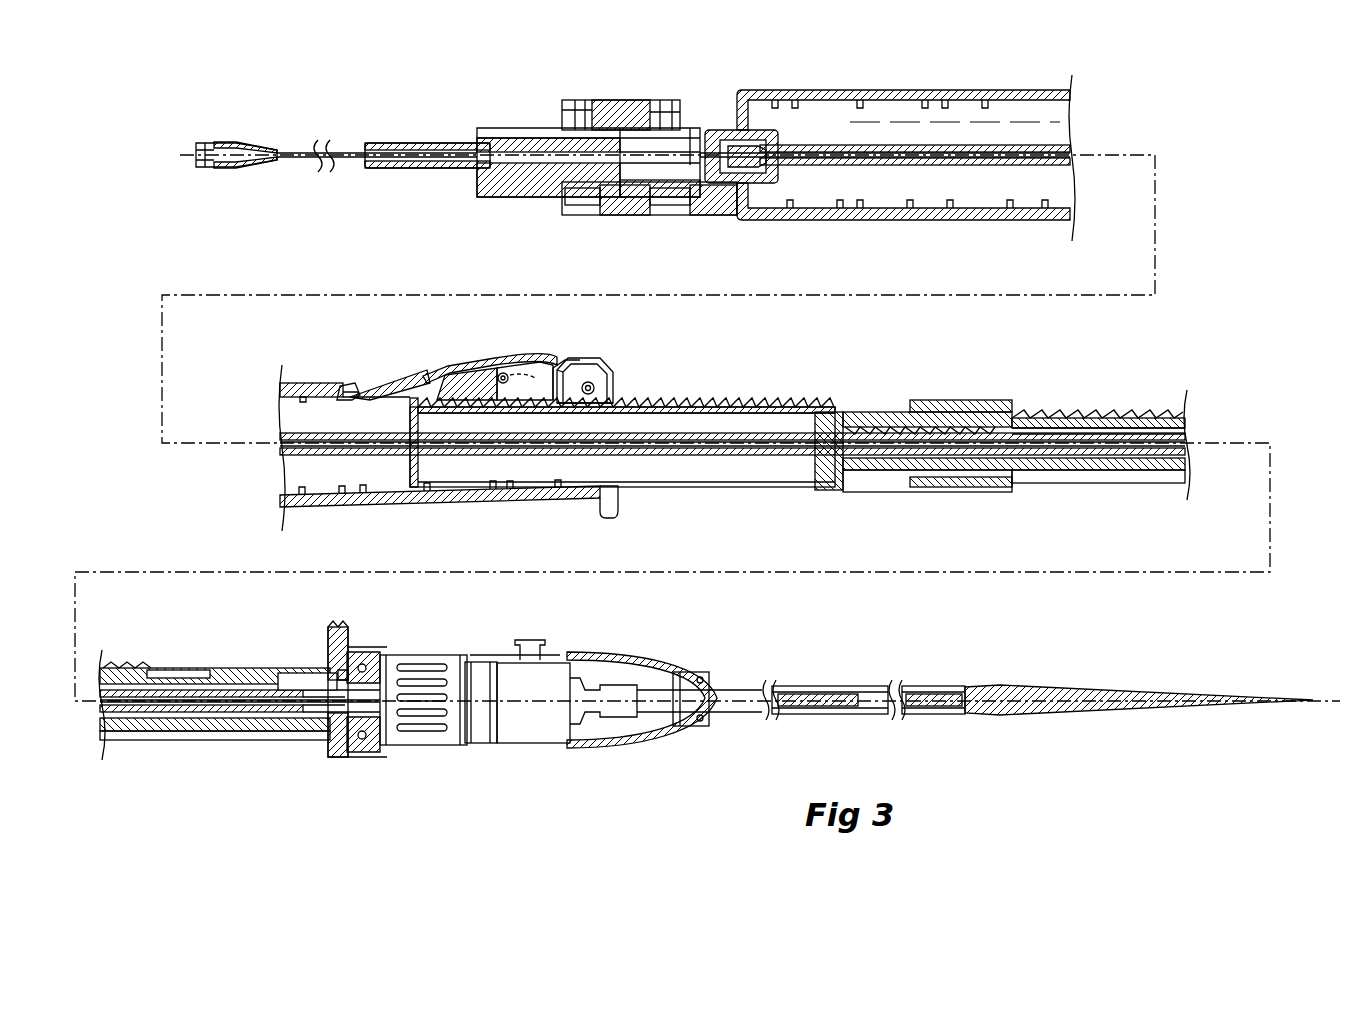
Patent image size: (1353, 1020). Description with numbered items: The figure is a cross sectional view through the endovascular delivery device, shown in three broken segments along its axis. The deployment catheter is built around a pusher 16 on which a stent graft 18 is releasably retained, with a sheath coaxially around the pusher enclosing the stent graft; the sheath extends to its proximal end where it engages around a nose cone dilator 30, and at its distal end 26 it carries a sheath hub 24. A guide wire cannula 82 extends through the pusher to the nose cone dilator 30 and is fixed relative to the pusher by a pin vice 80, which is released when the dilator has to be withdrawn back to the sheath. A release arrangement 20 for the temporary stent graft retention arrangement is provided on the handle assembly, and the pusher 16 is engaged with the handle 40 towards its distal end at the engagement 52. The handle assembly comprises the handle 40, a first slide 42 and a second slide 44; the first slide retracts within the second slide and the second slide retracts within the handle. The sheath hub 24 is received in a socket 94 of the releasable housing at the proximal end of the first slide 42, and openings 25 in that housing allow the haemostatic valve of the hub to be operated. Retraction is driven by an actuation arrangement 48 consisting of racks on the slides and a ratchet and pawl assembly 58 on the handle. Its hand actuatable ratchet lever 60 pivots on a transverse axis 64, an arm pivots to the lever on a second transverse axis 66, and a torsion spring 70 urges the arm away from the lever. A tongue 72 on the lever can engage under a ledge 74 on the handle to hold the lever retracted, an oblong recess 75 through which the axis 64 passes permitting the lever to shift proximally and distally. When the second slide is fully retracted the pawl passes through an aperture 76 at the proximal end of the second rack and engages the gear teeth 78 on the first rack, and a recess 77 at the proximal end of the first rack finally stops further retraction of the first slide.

The pusher 16 is at (970, 167).
The stent graft 18 is at (915, 713).
The release arrangement 20 is at (737, 88).
The sheath hub 24 is at (535, 710).
The openings 25 is at (440, 655).
The distal end 26 is at (729, 729).
The nose cone dilator 30 is at (1040, 713).
The handle 40 is at (905, 218).
The first slide 42 is at (1070, 470).
The second slide 44 is at (752, 488).
The actuation arrangement 48 is at (410, 354).
The pusher engagement 52 is at (775, 130).
The ratchet and pawl assembly 58 is at (462, 361).
The hand actuatable ratchet lever 60 is at (372, 372).
The transverse axis 64 is at (609, 388).
The transverse axis 66 is at (522, 380).
The torsion spring 70 is at (501, 373).
The tongue 72 is at (340, 399).
The ledge 74 is at (340, 385).
The oblong recess 75 is at (588, 381).
The aperture 76 is at (870, 405).
The recess 77 is at (178, 668).
The gear teeth 78 is at (1100, 412).
The pin vice 80 is at (405, 170).
The guide wire cannula 82 is at (291, 152).
The socket 94 is at (625, 748).